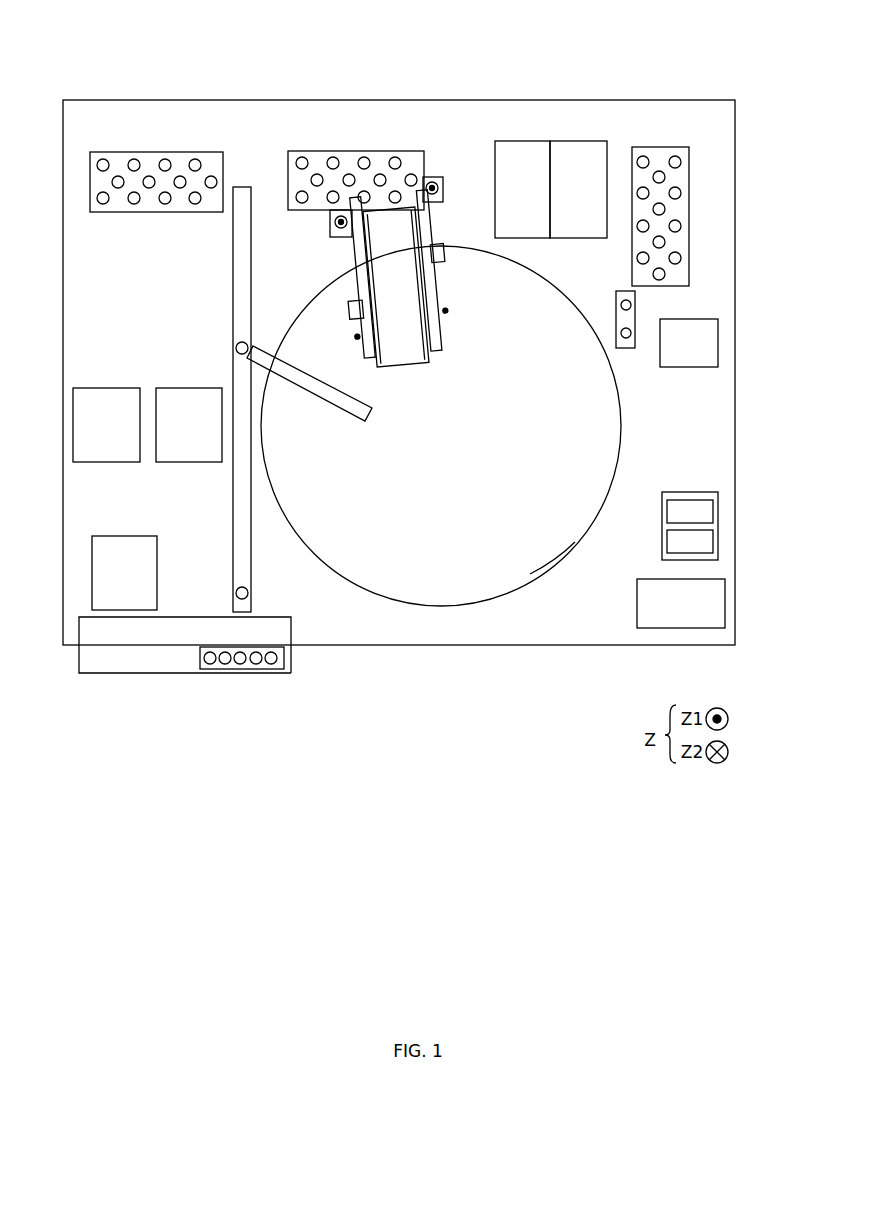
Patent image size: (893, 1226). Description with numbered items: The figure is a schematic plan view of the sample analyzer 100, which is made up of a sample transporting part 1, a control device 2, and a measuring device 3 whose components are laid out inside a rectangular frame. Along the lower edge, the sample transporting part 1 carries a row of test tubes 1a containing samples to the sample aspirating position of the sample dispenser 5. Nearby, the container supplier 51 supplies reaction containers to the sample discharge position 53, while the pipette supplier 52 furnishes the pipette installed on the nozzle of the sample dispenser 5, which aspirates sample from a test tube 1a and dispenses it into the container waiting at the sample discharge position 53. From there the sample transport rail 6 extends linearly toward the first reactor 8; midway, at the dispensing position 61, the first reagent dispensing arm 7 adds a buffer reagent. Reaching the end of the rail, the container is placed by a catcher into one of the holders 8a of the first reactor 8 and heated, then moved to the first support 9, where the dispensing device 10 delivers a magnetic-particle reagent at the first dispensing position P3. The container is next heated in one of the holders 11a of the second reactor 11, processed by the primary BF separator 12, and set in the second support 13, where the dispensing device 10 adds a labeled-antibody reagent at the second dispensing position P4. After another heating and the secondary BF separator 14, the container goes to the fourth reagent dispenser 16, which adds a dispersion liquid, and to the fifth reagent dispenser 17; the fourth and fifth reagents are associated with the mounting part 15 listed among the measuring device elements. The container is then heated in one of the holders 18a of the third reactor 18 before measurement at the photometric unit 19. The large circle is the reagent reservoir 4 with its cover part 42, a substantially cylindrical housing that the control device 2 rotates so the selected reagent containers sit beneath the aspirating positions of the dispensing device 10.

The sample analyzer 100 is at (400, 55).
The measuring device 3 is at (133, 100).
The first reactor 8 is at (216, 158).
The holders 8a is at (102, 170).
The second reactor 11 is at (413, 157).
The holders 11a is at (300, 168).
The second support 13 is at (433, 185).
The first support 9 is at (330, 230).
The first dispensing position P3 is at (330, 222).
The second dispensing position P4 is at (442, 198).
The dispensing device 10 is at (396, 304).
The primary BF separator 12 is at (516, 147).
The secondary BF separator 14 is at (578, 147).
The third reactor 18 is at (660, 150).
The holders 18a is at (678, 160).
The fourth reagent dispenser 16 is at (616, 301).
The fifth reagent dispenser 17 is at (628, 338).
The photometric unit 19 is at (682, 328).
The reagent reservoir 4 is at (474, 609).
The cover part 42 is at (553, 548).
The first reagent dispensing arm 7 is at (313, 391).
The pipette supplier 52 is at (103, 396).
The container supplier 51 is at (182, 396).
The sample transport rail 6 is at (242, 493).
The R1 reagent dispensing position 61 is at (237, 350).
The sample discharge position 53 is at (256, 591).
The sample dispenser 5 is at (124, 541).
The sample transporting part 1 is at (165, 681).
The test tubes 1a is at (240, 665).
The feeder unit 15 is at (690, 492).
The control device 2 is at (710, 608).